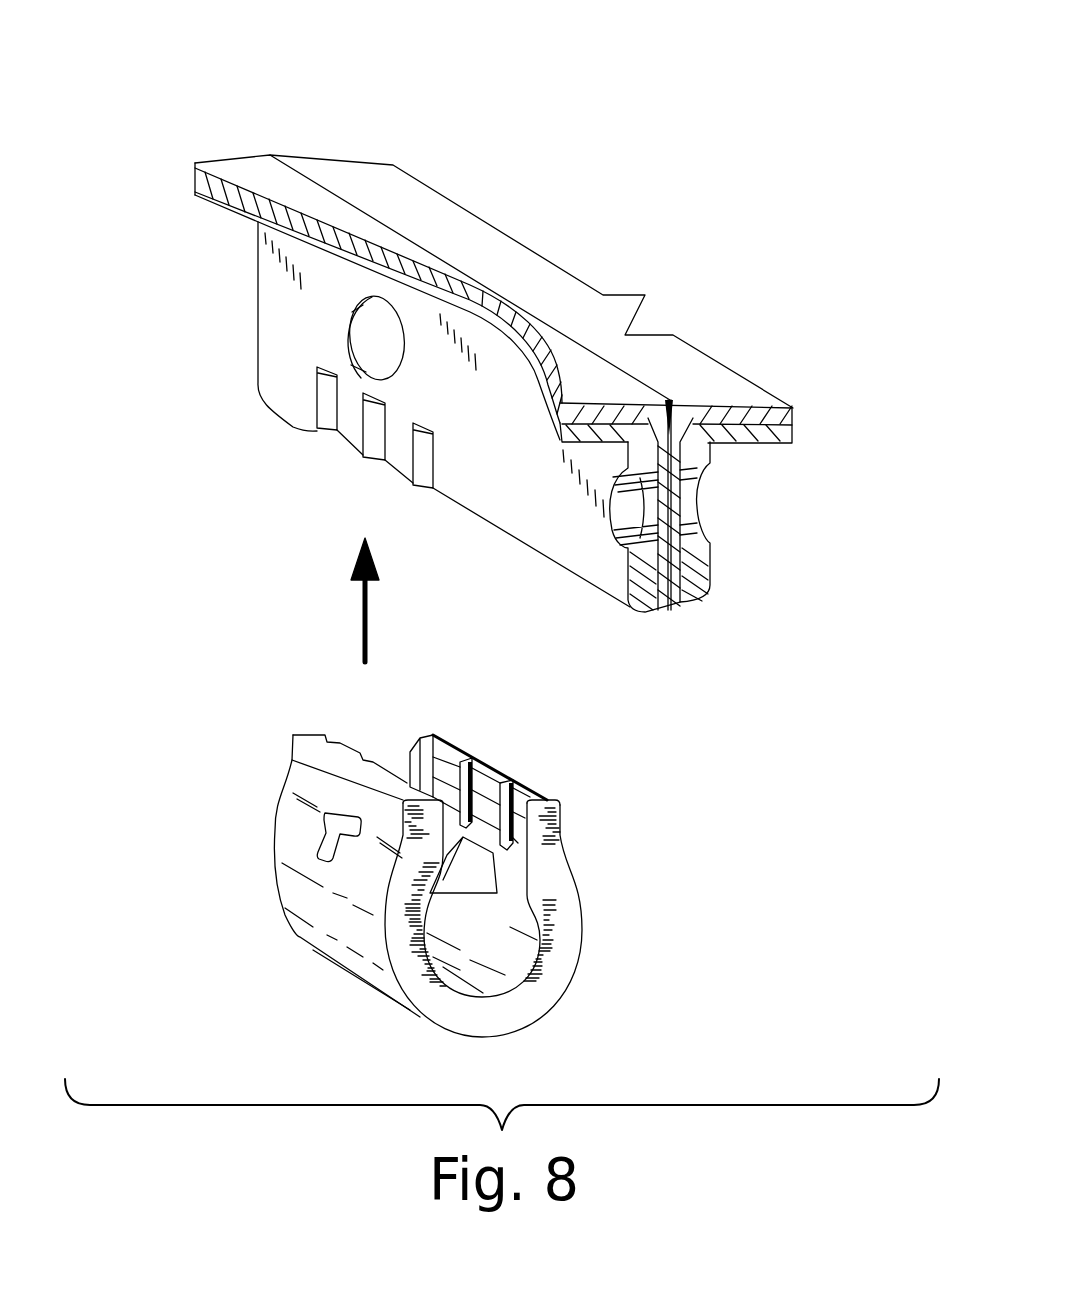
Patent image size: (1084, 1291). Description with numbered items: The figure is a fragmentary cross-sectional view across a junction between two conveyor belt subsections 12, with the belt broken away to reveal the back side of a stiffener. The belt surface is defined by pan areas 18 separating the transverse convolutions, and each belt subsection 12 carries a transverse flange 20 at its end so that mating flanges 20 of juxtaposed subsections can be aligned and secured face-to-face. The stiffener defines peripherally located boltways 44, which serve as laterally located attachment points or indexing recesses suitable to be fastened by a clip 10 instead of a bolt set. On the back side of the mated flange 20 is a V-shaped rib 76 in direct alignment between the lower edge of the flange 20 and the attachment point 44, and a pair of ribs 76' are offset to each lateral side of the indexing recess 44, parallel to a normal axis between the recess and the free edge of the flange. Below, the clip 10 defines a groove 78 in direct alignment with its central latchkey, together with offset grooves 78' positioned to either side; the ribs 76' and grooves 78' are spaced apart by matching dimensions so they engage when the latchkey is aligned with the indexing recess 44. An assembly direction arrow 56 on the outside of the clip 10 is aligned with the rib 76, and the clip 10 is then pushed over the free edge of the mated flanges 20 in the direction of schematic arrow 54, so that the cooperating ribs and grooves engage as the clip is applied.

The clip 10 is at (650, 963).
The belt subsection 12 is at (217, 118).
The pan area 18 is at (455, 222).
The transverse flange 20 is at (712, 553).
The peripherally located boltway 44 is at (383, 337).
The schematic arrow 54 is at (355, 646).
The assembly direction arrow 56 is at (323, 840).
The V-shaped rib 76 is at (258, 439).
The offset rib 76' is at (258, 461).
The groove 78 is at (411, 763).
The offset groove 78' is at (428, 735).